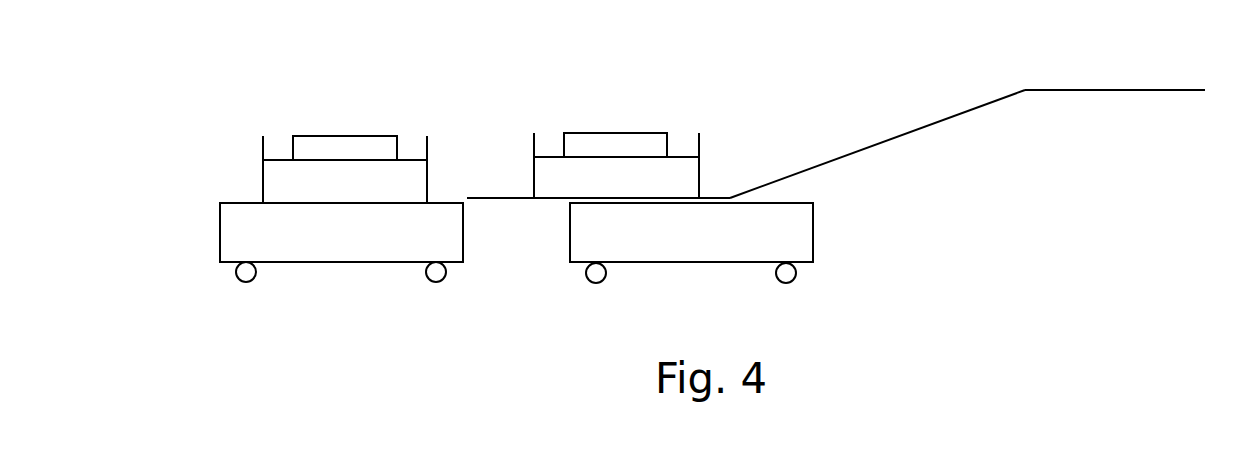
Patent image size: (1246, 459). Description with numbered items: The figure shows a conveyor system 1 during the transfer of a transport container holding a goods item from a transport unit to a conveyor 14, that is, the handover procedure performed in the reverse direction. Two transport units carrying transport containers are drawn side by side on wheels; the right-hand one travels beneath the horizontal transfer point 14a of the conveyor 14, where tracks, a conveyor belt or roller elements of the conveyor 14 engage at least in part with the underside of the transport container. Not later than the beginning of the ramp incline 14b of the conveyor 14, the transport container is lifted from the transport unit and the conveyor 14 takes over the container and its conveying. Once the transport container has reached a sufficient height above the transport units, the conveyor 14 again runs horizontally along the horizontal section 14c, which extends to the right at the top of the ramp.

The transport system 1 is at (208, 101).
The conveyor 14 is at (893, 105).
The transfer point 14a is at (490, 180).
The ramp incline 14b is at (983, 137).
The horizontal section 14c is at (1160, 109).